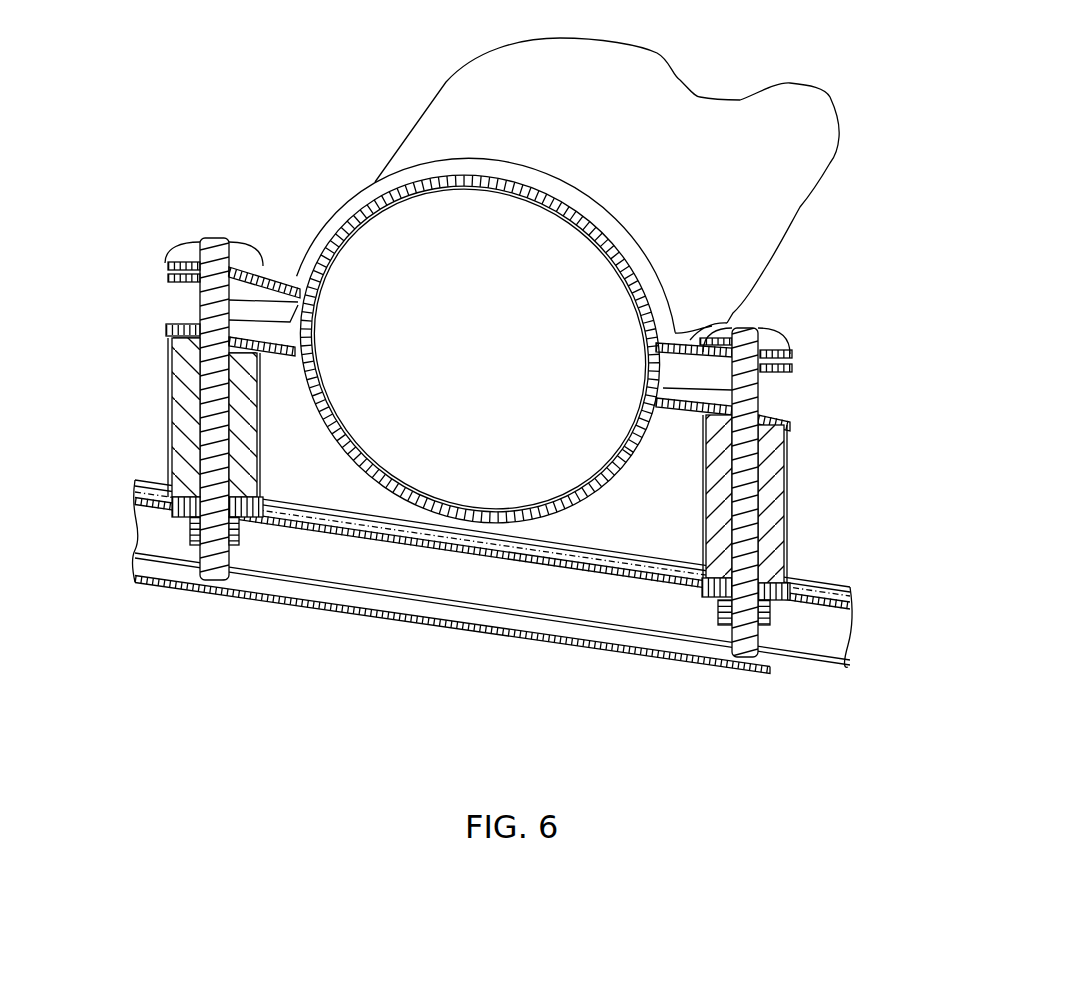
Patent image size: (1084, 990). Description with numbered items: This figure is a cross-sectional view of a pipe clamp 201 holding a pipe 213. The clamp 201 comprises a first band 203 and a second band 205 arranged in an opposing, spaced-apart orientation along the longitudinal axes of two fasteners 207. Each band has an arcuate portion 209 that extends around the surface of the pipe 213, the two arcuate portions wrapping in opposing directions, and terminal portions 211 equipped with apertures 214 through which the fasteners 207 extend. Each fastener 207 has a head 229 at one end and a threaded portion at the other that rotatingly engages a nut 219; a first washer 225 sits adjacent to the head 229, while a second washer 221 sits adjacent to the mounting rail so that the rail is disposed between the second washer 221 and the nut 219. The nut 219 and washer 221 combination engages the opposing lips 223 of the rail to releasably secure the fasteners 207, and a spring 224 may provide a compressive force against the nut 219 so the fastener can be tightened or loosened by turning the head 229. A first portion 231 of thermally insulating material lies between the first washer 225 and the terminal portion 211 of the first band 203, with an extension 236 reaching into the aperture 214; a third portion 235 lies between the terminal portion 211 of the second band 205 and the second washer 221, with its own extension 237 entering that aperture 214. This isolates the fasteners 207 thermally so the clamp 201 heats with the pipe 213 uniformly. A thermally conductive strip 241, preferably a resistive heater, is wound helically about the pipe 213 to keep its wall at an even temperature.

The pipe clamp 201 is at (236, 166).
The first band 203 is at (612, 190).
The second band 205 is at (620, 510).
The fastener 207 is at (786, 456).
The arcuate portion 209 is at (635, 247).
The terminal portion 211 is at (275, 280).
The pipe 213 is at (578, 108).
The aperture 214 is at (196, 283).
The nut 219 is at (243, 532).
The second washer 221 is at (270, 485).
The opposing lips 223 is at (148, 470).
The spring 224 is at (702, 627).
The first washer 225 is at (808, 335).
The head 229 is at (758, 303).
The first portion of thermally insulating material 231 is at (770, 366).
The third portion of thermally insulating material 235 is at (786, 490).
The extension 236 is at (198, 283).
The extension 237 is at (197, 340).
The thermally conductive strip 241 is at (650, 372).